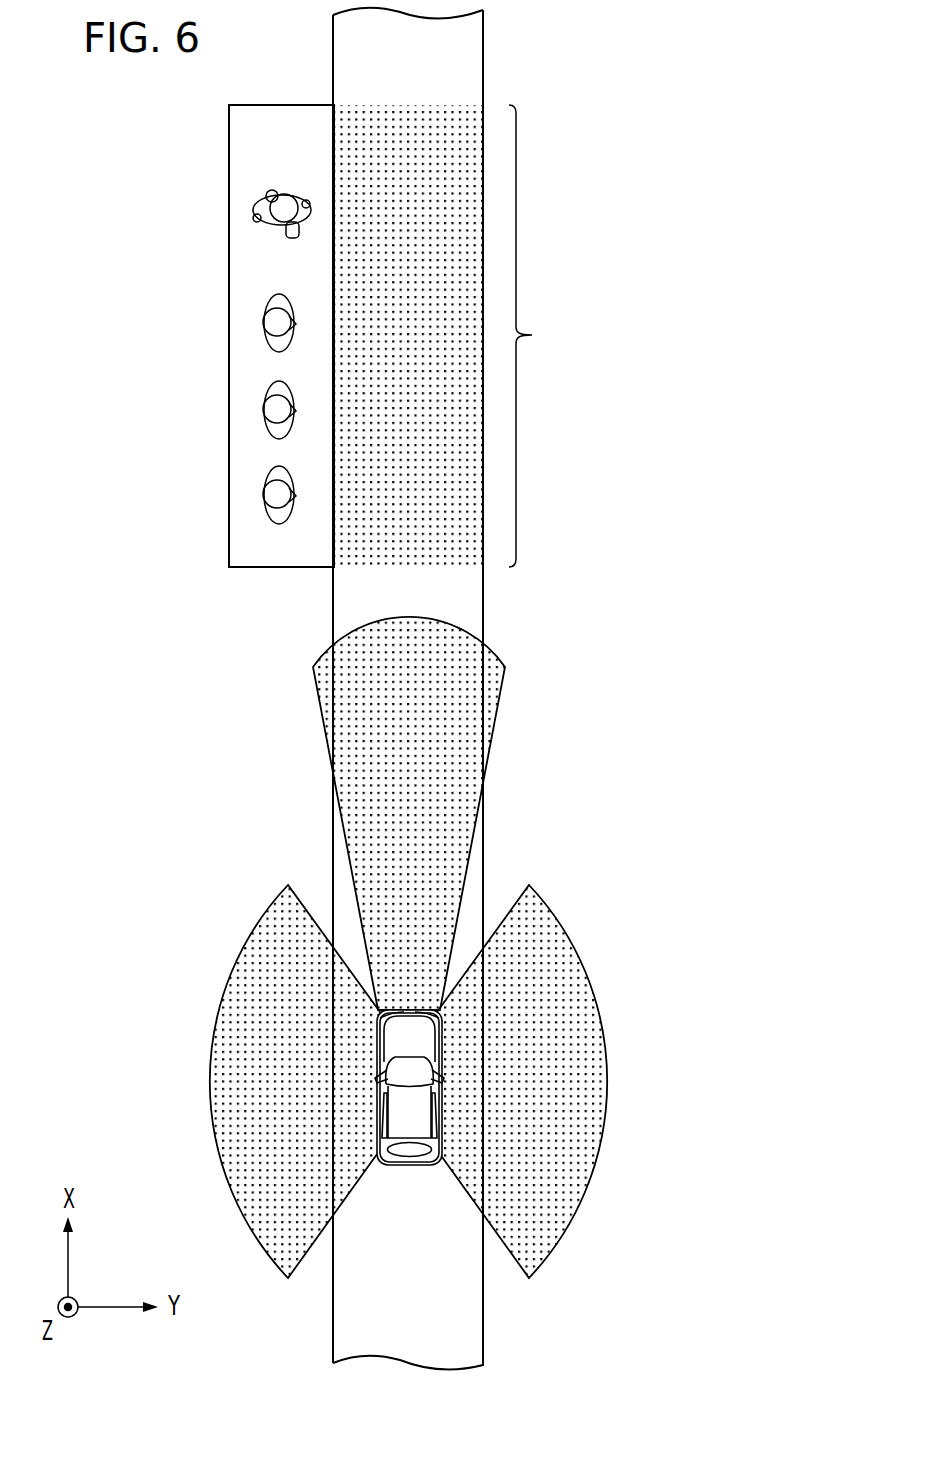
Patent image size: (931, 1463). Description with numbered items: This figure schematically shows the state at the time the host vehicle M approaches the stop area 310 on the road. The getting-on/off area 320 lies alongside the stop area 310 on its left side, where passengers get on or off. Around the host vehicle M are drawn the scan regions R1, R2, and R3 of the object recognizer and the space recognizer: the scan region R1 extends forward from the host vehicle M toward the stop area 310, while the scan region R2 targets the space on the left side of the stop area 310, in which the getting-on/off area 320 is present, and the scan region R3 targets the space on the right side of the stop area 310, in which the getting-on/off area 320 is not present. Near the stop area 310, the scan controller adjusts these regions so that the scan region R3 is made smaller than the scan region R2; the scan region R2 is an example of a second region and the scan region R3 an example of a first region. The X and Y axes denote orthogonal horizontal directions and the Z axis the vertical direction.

The stop area 310 is at (457, 336).
The getting-on/off area 320 is at (212, 172).
The scan region R1 is at (468, 703).
The scan region R2 is at (236, 979).
The scan region R3 is at (580, 979).
The host vehicle M is at (407, 1167).